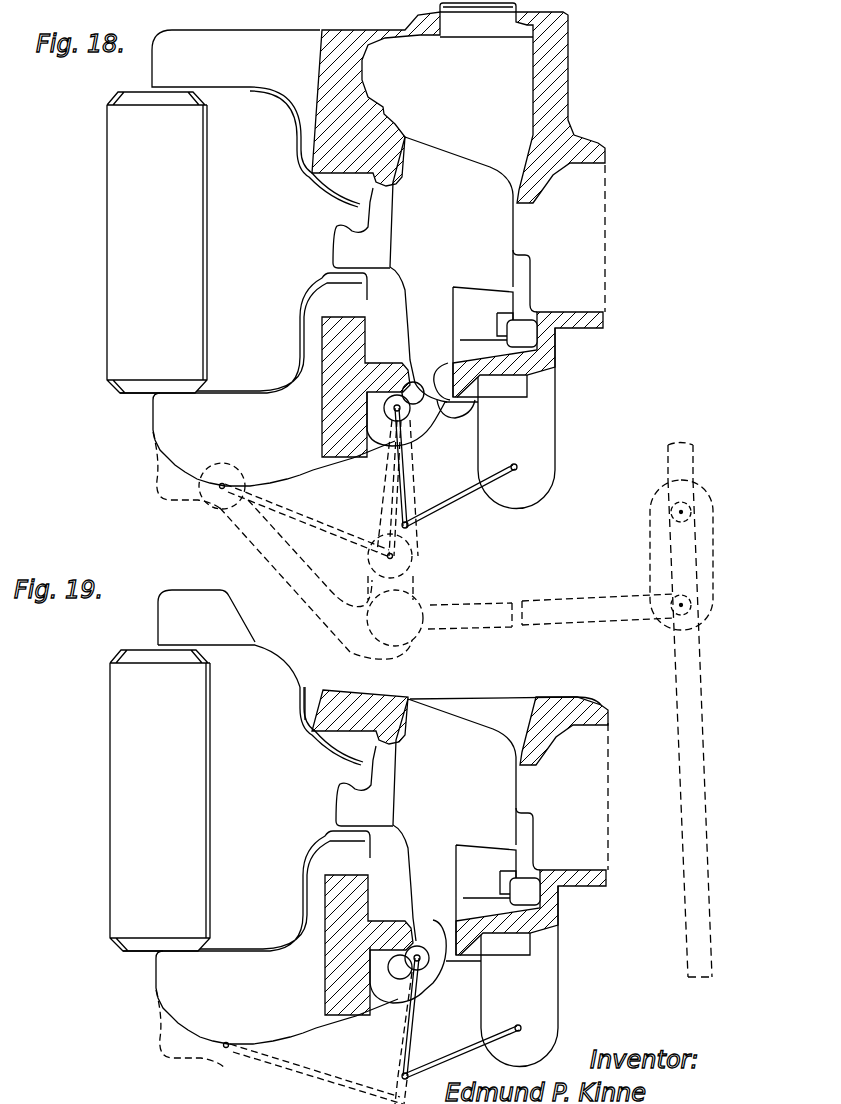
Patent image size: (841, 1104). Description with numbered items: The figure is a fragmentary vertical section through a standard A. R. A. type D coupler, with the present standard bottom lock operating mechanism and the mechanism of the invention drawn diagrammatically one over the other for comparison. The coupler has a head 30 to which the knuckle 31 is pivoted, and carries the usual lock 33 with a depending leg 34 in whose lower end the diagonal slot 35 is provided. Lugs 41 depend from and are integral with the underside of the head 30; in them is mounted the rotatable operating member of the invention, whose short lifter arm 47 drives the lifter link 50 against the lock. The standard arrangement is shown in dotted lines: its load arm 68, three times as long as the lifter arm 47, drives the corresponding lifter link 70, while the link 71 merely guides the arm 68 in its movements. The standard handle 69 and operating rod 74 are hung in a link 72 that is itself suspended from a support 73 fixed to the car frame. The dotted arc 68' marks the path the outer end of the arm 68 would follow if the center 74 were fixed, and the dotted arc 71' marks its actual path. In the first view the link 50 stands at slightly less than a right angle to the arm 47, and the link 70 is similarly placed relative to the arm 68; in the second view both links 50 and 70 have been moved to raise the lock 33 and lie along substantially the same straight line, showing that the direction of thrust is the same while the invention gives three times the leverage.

In FIG. 18, the coupler head 30 is at (362, 32).
In FIG. 19, the coupler head 30 is at (346, 692).
In FIG. 18, the knuckle 31 is at (107, 162).
In FIG. 19, the knuckle 31 is at (138, 800).
In FIG. 18, the lock 33 is at (451, 212).
In FIG. 19, the lock 33 is at (454, 772).
In FIG. 18, the depending leg 34 is at (451, 334).
In FIG. 19, the depending leg 34 is at (454, 890).
In FIG. 18, the diagonally arranged slot 35 is at (410, 384).
In FIG. 19, the diagonally arranged slot 35 is at (403, 952).
In FIG. 18, the lugs 41 is at (545, 420).
In FIG. 19, the lugs 41 is at (531, 968).
In FIG. 18, the lifter arm 47 is at (457, 502).
In FIG. 19, the lifter arm 47 is at (459, 1070).
In FIG. 18, the lifter link 50 is at (408, 467).
In FIG. 19, the lifter link 50 is at (416, 1030).
In FIG. 18, the lifter link 70 is at (395, 480).
In FIG. 19, the lifter link 70 is at (398, 1080).
In FIG. 18, the link 71 is at (295, 511).
In FIG. 19, the link 71 is at (314, 1074).
In FIG. 18, the dotted arcuate line 71' is at (415, 553).
In FIG. 18, the lifter arm 68 is at (550, 604).
In FIG. 18, the dotted arcuate line 68' is at (334, 595).
In FIG. 18, the link 72 is at (653, 540).
In FIG. 18, the support 73 is at (672, 463).
In FIG. 18, the operating rod 74 is at (678, 607).
In FIG. 18, the handle 69 is at (680, 797).